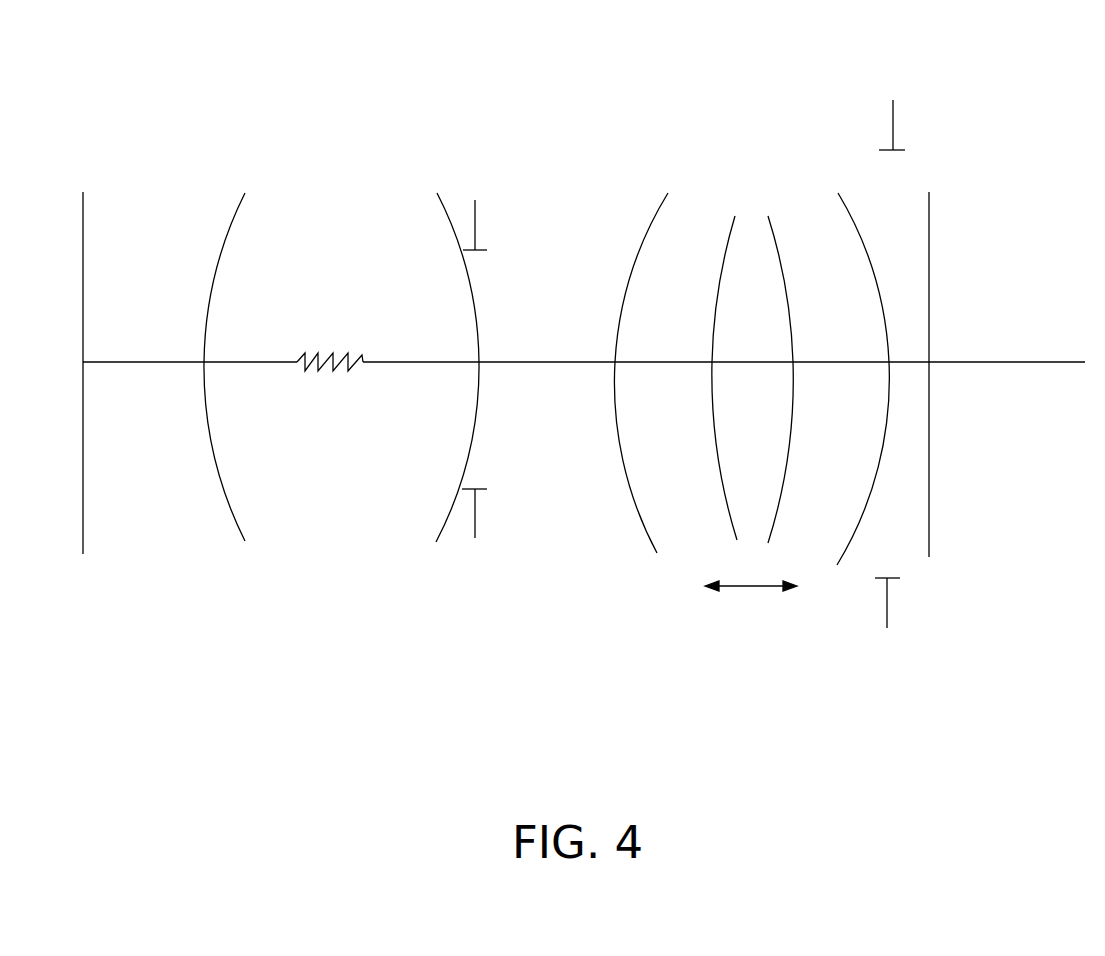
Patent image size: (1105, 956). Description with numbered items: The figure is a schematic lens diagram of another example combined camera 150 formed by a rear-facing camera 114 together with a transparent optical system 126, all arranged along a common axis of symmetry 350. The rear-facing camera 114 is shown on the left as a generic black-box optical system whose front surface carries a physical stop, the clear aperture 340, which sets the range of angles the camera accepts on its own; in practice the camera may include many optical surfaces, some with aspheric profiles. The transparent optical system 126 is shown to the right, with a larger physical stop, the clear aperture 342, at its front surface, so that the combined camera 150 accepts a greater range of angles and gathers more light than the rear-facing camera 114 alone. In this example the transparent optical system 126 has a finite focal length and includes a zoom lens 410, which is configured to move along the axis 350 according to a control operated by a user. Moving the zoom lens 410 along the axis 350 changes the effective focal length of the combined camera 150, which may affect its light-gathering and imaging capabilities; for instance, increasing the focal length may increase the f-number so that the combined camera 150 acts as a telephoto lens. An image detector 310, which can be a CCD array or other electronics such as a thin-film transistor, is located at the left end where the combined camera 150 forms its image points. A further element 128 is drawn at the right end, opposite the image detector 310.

The combined camera 150 is at (127, 82).
The rear-facing camera 114 is at (325, 174).
The clear aperture 340 is at (475, 212).
The zoom lens 410 is at (733, 220).
The transparent optical system 126 is at (762, 178).
The clear aperture 342 is at (896, 130).
The axis of symmetry 350 is at (1015, 363).
The image detector 310 is at (83, 530).
The image plane 128 is at (929, 519).